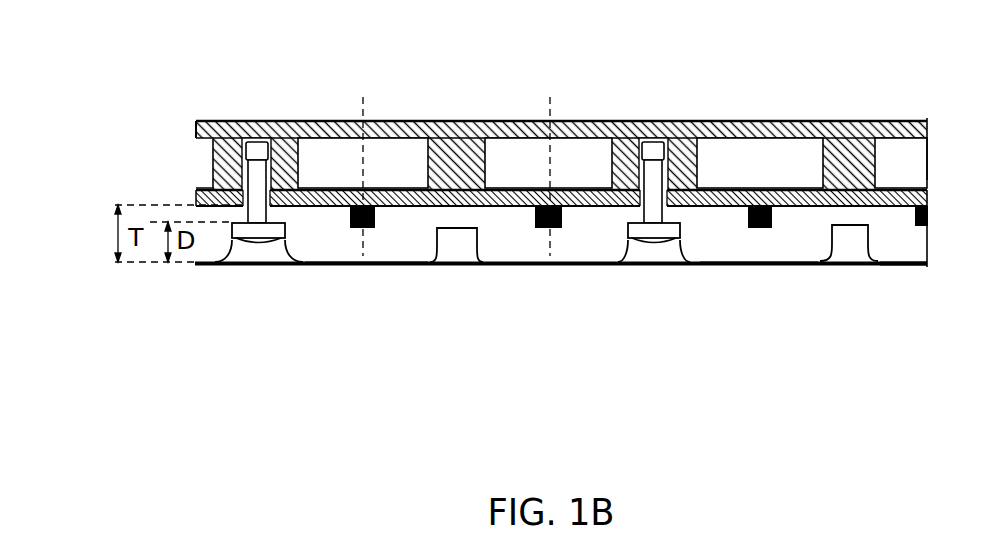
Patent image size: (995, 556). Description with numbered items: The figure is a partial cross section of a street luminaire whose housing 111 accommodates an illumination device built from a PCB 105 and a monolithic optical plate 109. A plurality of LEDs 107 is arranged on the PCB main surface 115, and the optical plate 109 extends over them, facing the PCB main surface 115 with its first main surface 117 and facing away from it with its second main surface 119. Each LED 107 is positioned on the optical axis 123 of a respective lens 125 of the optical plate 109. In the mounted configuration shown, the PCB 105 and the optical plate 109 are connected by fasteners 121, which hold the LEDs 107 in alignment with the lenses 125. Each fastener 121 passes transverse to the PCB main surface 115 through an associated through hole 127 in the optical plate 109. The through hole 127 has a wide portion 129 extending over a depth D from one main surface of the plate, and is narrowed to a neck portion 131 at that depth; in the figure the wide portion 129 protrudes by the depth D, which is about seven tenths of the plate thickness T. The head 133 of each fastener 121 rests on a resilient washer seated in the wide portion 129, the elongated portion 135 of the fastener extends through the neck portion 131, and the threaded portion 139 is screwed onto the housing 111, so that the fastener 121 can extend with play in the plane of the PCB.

The PCB 105 is at (792, 190).
The LEDs 107 is at (537, 240).
The optical plate 109 is at (425, 237).
The housing 111 is at (345, 122).
The PCB main surface 115 is at (887, 207).
The first main surface 117 is at (318, 205).
The second main surface 119 is at (238, 265).
The fasteners 121 is at (655, 198).
The optical axis 123 is at (550, 102).
The lens 125 is at (380, 242).
The through hole 127 is at (653, 240).
The wide portion 129 is at (687, 258).
The neck portion 131 is at (243, 213).
The head 133 is at (257, 232).
The elongated portion 135 is at (252, 180).
The threaded portion 139 is at (257, 142).